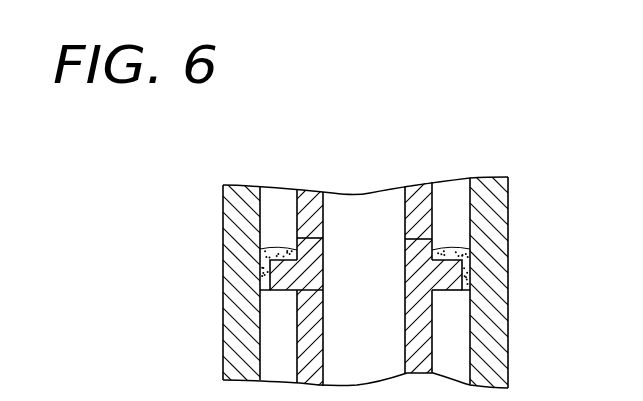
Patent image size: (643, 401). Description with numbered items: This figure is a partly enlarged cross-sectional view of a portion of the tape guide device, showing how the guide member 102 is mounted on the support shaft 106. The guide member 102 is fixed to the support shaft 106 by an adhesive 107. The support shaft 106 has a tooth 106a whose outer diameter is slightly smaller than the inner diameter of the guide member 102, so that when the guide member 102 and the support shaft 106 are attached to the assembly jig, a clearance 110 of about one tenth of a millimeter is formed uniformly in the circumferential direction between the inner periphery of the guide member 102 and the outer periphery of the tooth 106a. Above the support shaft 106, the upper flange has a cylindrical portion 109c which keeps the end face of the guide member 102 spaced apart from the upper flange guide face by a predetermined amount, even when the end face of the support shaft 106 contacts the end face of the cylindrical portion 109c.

The guide member 102 is at (222, 338).
The support shaft 106 is at (433, 355).
The tooth of support shaft 106a is at (467, 281).
The adhesive 107 is at (277, 249).
The cylindrical portion of upper flange 109c is at (438, 193).
The clearance 110 is at (467, 260).